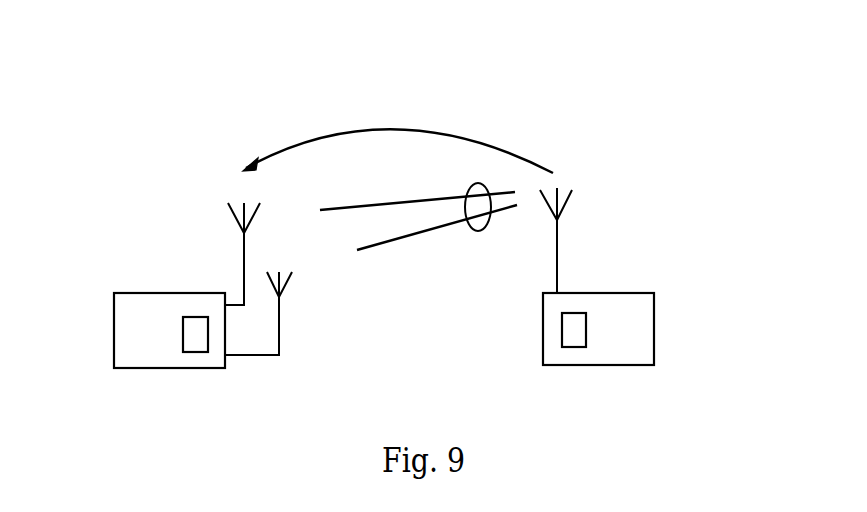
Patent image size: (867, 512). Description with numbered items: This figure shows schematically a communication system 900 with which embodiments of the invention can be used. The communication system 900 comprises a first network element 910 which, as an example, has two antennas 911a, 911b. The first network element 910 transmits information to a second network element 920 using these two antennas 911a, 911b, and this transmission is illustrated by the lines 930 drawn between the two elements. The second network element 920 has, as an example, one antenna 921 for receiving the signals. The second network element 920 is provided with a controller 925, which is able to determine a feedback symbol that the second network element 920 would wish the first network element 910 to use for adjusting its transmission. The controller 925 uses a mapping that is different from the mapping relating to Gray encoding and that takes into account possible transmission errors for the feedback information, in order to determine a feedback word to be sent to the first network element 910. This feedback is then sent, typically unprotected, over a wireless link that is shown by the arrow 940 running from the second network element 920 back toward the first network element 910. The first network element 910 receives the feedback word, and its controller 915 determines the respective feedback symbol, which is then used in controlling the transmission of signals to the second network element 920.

The communication system 900 is at (643, 67).
The first network element 910 is at (113, 322).
The antenna 911a is at (244, 243).
The antenna 911b is at (279, 328).
The controller 915 is at (182, 322).
The second network element 920 is at (654, 317).
The antenna 921 is at (557, 232).
The controller 925 is at (586, 327).
The lines 930 is at (466, 186).
The arrow 940 is at (453, 133).